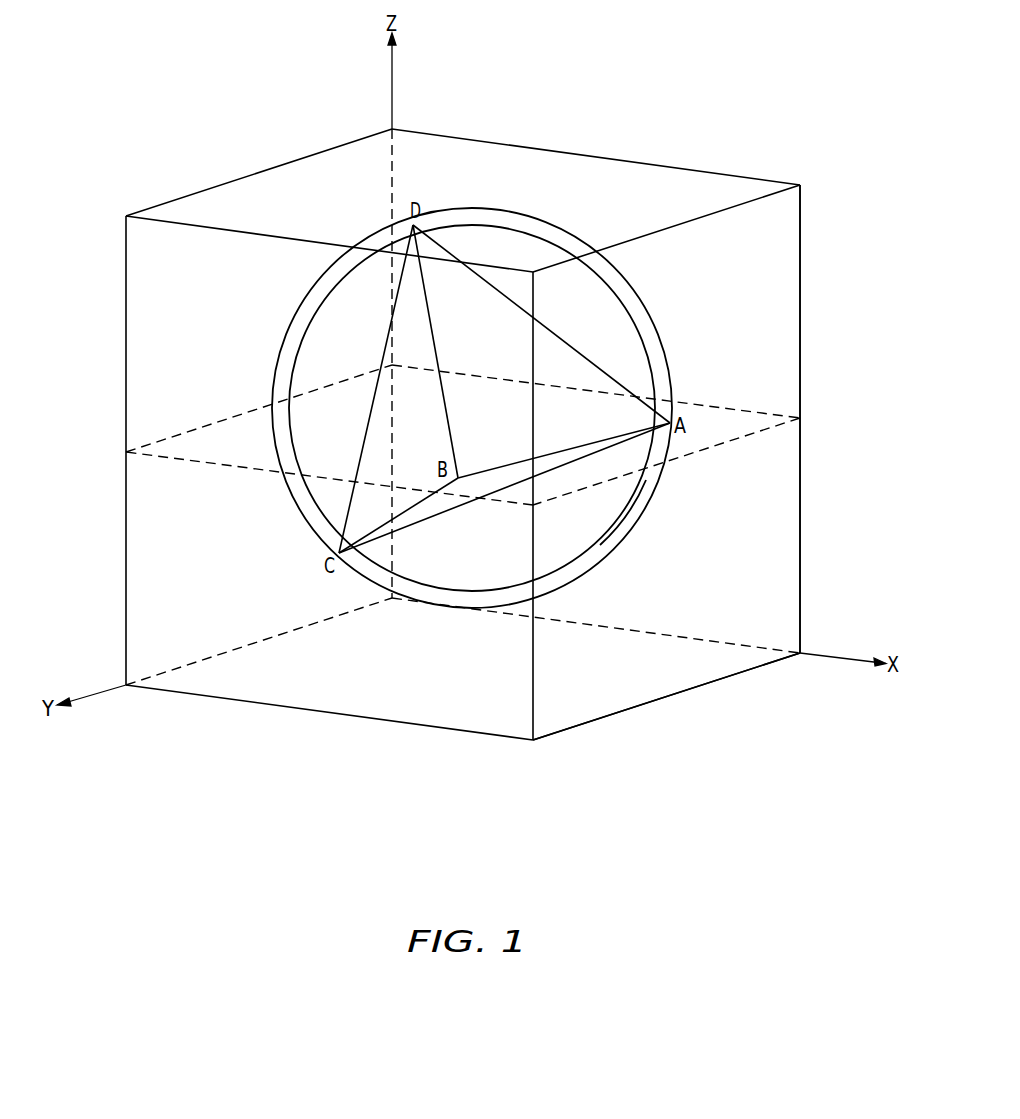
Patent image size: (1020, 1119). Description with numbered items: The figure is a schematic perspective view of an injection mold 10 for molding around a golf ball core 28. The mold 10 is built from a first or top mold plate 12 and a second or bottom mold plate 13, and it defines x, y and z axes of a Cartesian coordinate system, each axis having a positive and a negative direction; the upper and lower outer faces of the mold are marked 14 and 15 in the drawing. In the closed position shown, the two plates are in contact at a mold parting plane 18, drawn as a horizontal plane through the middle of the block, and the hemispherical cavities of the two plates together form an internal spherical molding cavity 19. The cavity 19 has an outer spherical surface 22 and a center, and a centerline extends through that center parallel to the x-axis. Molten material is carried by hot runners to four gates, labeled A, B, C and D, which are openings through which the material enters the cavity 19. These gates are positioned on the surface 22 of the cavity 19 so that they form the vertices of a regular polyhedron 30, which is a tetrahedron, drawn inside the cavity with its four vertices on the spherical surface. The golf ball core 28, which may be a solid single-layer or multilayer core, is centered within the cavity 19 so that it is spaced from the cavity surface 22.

The injection mold 10 is at (705, 110).
The top mold plate 12 is at (800, 352).
The bottom mold plate 13 is at (800, 515).
The top surface 14 is at (746, 189).
The bottom surface 15 is at (658, 702).
The mold parting plane 18 is at (768, 427).
The spherical molding cavity 19 is at (553, 240).
The outer spherical surface 22 is at (648, 313).
The golf ball core 28 is at (627, 505).
The regular polyhedron 30 is at (610, 377).